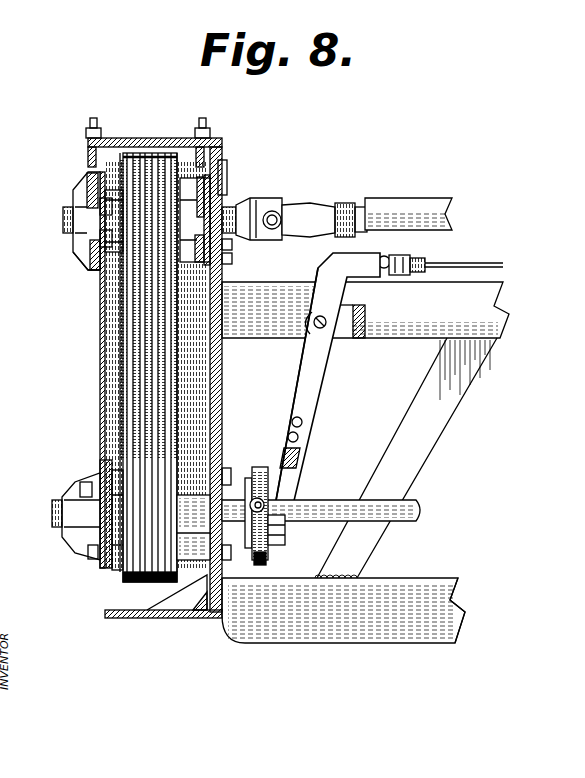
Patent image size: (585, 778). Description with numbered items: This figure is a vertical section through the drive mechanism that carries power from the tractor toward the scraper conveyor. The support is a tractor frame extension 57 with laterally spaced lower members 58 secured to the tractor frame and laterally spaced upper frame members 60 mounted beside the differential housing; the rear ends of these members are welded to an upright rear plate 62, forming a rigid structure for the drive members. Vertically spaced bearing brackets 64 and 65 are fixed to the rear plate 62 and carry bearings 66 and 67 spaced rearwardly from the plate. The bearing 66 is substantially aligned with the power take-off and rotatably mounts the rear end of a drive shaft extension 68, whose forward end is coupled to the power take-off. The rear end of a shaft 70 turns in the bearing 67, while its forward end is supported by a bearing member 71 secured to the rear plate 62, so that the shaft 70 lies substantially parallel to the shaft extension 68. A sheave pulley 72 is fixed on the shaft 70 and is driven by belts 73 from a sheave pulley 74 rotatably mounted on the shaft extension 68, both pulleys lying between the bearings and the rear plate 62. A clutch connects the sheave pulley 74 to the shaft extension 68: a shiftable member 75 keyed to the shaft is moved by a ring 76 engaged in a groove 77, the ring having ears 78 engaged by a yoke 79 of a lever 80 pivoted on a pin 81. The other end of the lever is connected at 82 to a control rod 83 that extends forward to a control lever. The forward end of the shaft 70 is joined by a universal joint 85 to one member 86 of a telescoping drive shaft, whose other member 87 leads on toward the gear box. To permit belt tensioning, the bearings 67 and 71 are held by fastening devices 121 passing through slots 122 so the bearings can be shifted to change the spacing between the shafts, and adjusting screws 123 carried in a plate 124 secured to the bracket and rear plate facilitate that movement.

The tractor frame extension 57 is at (243, 640).
The lower members 58 is at (453, 634).
The upper frame members 60 is at (483, 298).
The rear plate 62 is at (219, 404).
The bearing bracket 64 is at (102, 575).
The bearing bracket 65 is at (98, 270).
The bearing 66 is at (84, 482).
The bearing 67 is at (78, 244).
The drive shaft extension 68 is at (305, 501).
The shaft 70 is at (62, 212).
The bearing member 71 is at (197, 212).
The sheave pulley 72 is at (121, 289).
The belts 73 is at (132, 355).
The sheave pulley 74 is at (124, 578).
The shiftable member 75 is at (236, 497).
The ring 76 is at (258, 468).
The groove 77 is at (248, 556).
The ears 78 is at (287, 530).
The yoke 79 is at (297, 460).
The lever 80 is at (313, 374).
The pin 81 is at (316, 324).
The connection 82 is at (396, 260).
The control rod 83 is at (490, 262).
The universal joint 85 is at (266, 199).
The telescoping drive shaft member 86 is at (333, 207).
The telescoping drive shaft member 87 is at (422, 203).
The fastening devices 121 is at (232, 258).
The slots 122 is at (232, 245).
The adjusting screws 123 is at (92, 158).
The plate 124 is at (216, 147).